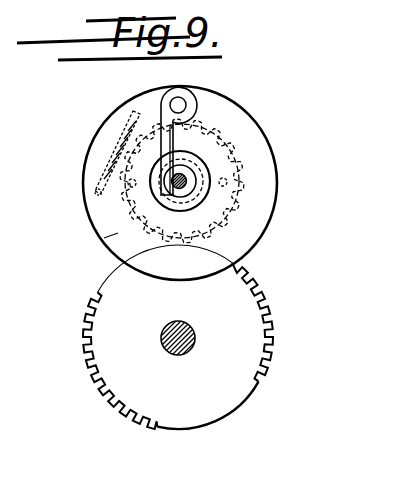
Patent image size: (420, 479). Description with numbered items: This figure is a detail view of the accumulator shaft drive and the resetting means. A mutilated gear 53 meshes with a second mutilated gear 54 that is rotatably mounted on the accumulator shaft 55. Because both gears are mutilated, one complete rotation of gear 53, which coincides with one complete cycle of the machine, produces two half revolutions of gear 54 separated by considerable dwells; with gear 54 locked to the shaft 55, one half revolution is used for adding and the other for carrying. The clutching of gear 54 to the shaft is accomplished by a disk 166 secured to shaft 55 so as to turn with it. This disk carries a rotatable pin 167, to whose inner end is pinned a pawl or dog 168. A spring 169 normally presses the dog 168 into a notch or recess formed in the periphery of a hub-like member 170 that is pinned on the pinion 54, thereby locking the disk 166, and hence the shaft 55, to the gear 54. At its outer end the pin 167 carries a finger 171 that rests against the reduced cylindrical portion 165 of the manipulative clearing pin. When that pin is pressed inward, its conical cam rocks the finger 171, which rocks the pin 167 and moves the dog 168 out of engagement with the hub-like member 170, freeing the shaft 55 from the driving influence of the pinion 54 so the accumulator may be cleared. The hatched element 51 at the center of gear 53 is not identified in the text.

The shaft 51 is at (180, 348).
The mutilated gear 53 is at (223, 394).
The mutilated gear 54 is at (212, 142).
The accumulator shaft 55 is at (206, 162).
The reduced cylindrical portion 165 is at (186, 184).
The disk 166 is at (250, 233).
The rotatable pin 167 is at (182, 104).
The pawl or dog 168 is at (148, 108).
The spring 169 is at (107, 170).
The hub-like member 170 is at (104, 240).
The finger 171 is at (165, 198).